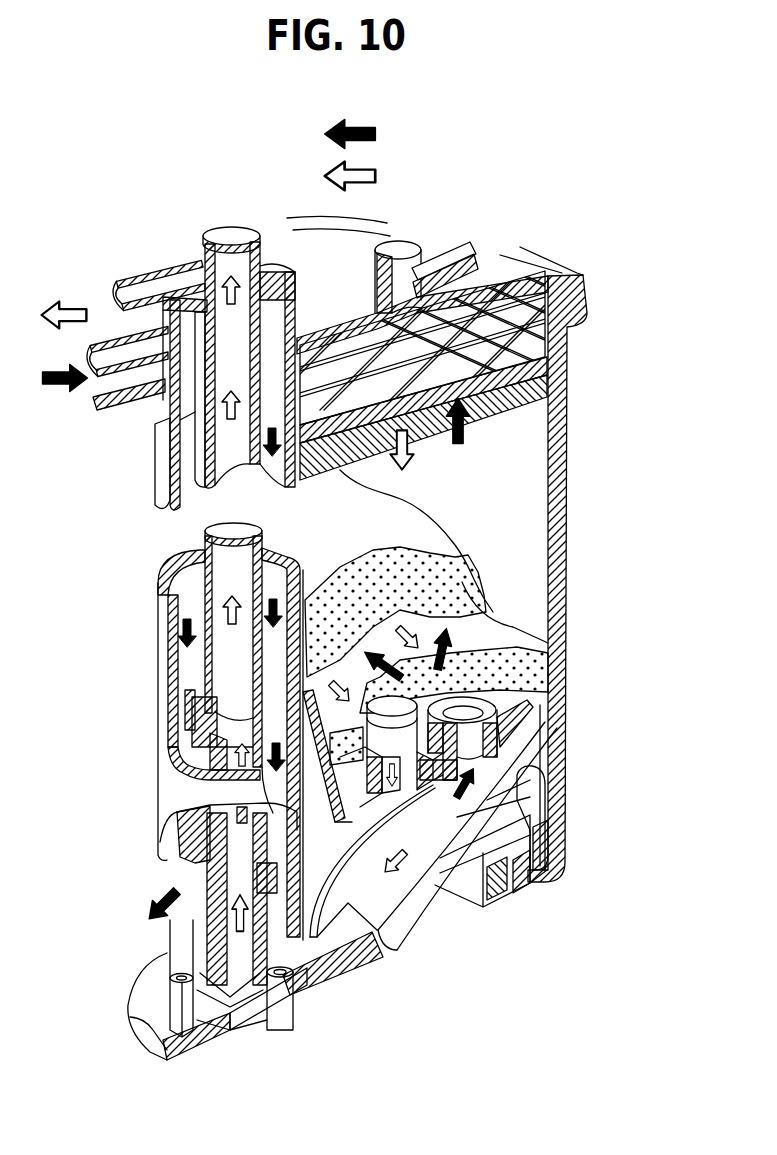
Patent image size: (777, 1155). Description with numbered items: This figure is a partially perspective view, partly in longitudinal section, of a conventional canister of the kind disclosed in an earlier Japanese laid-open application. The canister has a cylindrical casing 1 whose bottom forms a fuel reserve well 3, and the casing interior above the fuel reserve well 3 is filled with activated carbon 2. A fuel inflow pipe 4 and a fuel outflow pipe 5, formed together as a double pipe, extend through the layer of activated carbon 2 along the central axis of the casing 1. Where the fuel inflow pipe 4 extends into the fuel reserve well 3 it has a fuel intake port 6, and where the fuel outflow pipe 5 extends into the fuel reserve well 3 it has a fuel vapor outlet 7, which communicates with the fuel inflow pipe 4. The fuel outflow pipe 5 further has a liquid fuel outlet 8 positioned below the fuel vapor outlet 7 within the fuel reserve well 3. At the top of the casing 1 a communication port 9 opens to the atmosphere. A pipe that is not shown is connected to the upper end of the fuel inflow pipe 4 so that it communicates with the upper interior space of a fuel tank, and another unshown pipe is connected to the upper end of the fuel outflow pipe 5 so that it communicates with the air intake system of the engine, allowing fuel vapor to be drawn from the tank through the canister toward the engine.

The cylindrical casing 1 is at (565, 513).
The activated carbon 2 is at (478, 575).
The fuel reserve well 3 is at (345, 931).
The fuel inflow pipe 4 is at (165, 472).
The fuel outflow pipe 5 is at (200, 583).
The fuel intake port 6 is at (178, 949).
The fuel vapor outlet 7 is at (193, 823).
The liquid fuel outlet 8 is at (277, 937).
The communication port 9 is at (470, 268).